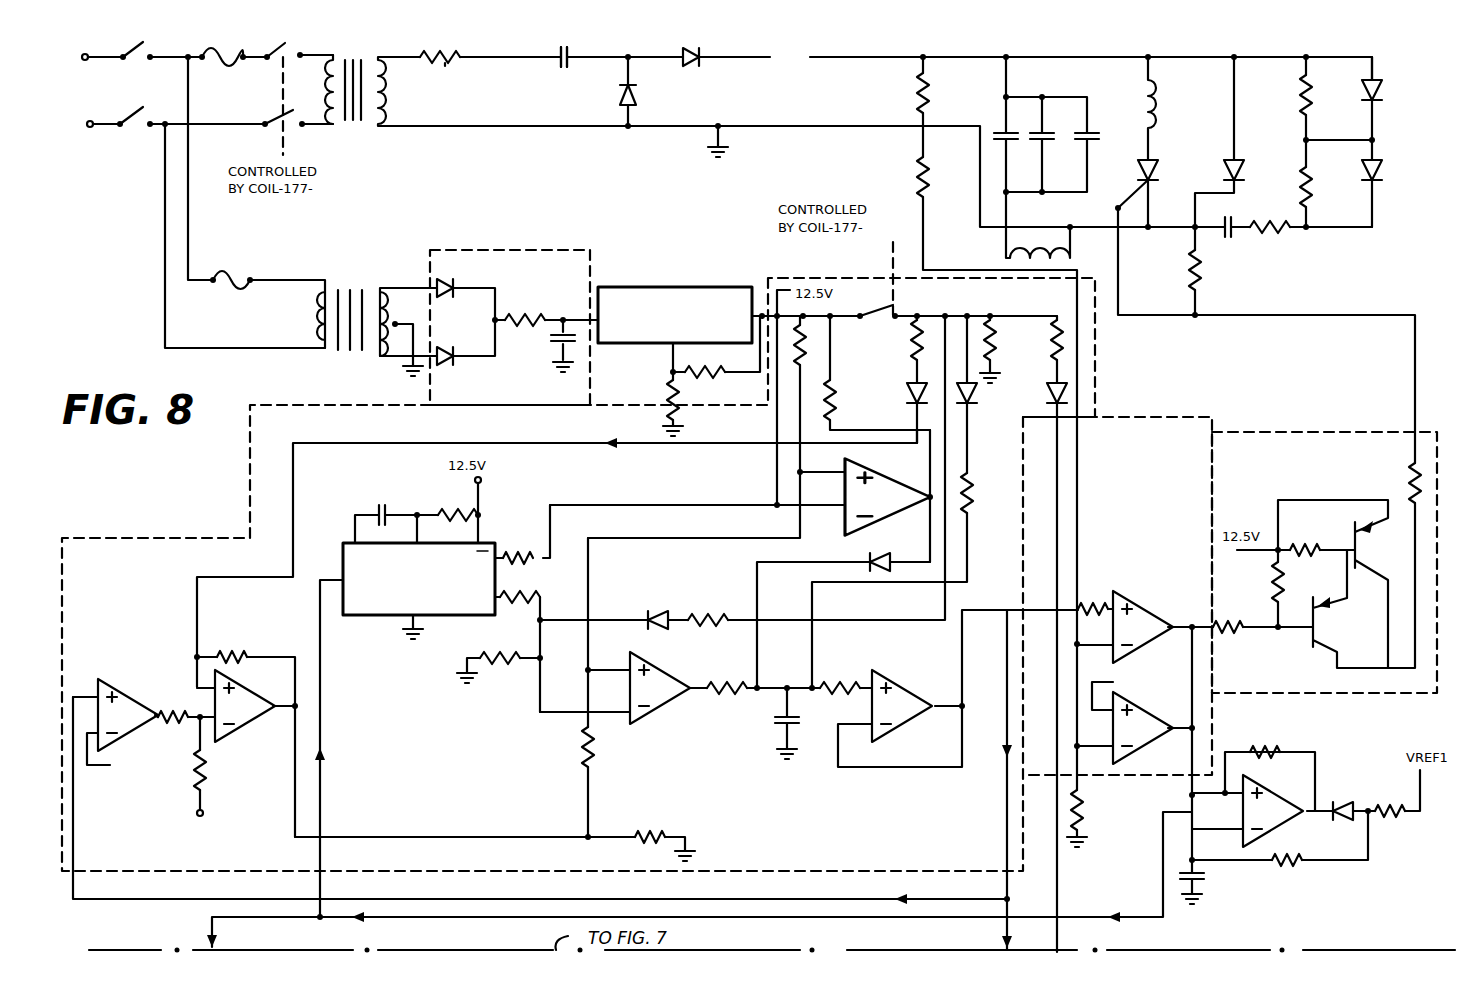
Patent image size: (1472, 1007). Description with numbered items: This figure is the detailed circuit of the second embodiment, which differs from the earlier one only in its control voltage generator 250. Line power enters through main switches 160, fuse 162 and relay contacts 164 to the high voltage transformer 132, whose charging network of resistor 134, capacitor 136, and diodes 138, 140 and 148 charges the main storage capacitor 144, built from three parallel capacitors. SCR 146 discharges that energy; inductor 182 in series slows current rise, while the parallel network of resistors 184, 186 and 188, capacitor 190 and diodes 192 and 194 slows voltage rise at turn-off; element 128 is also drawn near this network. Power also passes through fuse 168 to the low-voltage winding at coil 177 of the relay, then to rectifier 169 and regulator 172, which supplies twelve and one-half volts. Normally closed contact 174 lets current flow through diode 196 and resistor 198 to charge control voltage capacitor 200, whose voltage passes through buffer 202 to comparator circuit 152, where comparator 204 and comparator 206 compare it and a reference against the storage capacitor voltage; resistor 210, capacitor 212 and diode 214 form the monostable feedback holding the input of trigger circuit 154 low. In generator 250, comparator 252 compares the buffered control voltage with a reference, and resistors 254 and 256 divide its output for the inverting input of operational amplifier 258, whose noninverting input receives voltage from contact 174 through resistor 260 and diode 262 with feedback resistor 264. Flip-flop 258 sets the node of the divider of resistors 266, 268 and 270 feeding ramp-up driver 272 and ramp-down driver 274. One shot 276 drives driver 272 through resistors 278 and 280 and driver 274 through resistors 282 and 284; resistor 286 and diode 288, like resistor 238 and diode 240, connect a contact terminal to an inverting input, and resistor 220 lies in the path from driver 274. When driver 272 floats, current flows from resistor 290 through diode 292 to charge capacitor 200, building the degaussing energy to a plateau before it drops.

The main switches 160 is at (136, 50).
The fuse 162 is at (255, 50).
The relay contacts 164 is at (292, 42).
The high voltage transformer 132 is at (428, 52).
The resistor 134 is at (447, 66).
The capacitor 136 is at (567, 50).
The diode 138 is at (617, 100).
The diode 140 is at (706, 50).
The main storage capacitor 144 is at (1104, 114).
The coil 128 is at (1064, 232).
The inductor 182 is at (1160, 112).
The SCR 146 is at (1158, 162).
The diode 148 is at (1240, 166).
The resistor 184 is at (1302, 108).
The resistor 186 is at (1300, 204).
The diode 192 is at (1381, 84).
The diode 194 is at (1385, 176).
The resistor 188 is at (1276, 235).
The capacitor 190 is at (1210, 262).
The fuse 168 is at (258, 268).
The coil 177 is at (352, 286).
The rectifier 169 is at (544, 254).
The regulator 172 is at (705, 284).
The resistor 278 is at (756, 396).
The contact 174 is at (876, 320).
The control voltage generator 250 is at (136, 536).
The comparator circuit 152 is at (1158, 414).
The trigger circuit 154 is at (1350, 432).
The resistor 260 is at (942, 302).
The diode 262 is at (910, 406).
The resistor 290 is at (837, 388).
The resistor 266 is at (806, 350).
The ramp-up driver 272 is at (882, 492).
The diode 292 is at (897, 544).
The diode 196 is at (982, 406).
The resistor 198 is at (976, 506).
The diode 240 is at (1000, 376).
The resistor 238 is at (1056, 318).
The resistor 286 is at (735, 603).
The diode 288 is at (636, 615).
The one shot 276 is at (373, 618).
The resistor 280 is at (525, 552).
The resistor 282 is at (524, 597).
The resistor 284 is at (510, 655).
The comparator 252 is at (124, 658).
The resistor 256 is at (176, 710).
The resistor 254 is at (170, 790).
The operational amplifier 258 is at (268, 744).
The resistor 264 is at (232, 652).
The resistor 268 is at (600, 742).
The resistor 270 is at (655, 832).
The ramp-down driver 274 is at (644, 654).
The resistor 220 is at (740, 668).
The control voltage capacitor 200 is at (768, 735).
The buffer 202 is at (895, 688).
The comparator 204 is at (1158, 590).
The comparator 206 is at (1158, 748).
The capacitor 212 is at (1215, 882).
The resistor 210 is at (1296, 754).
The diode 214 is at (1346, 800).